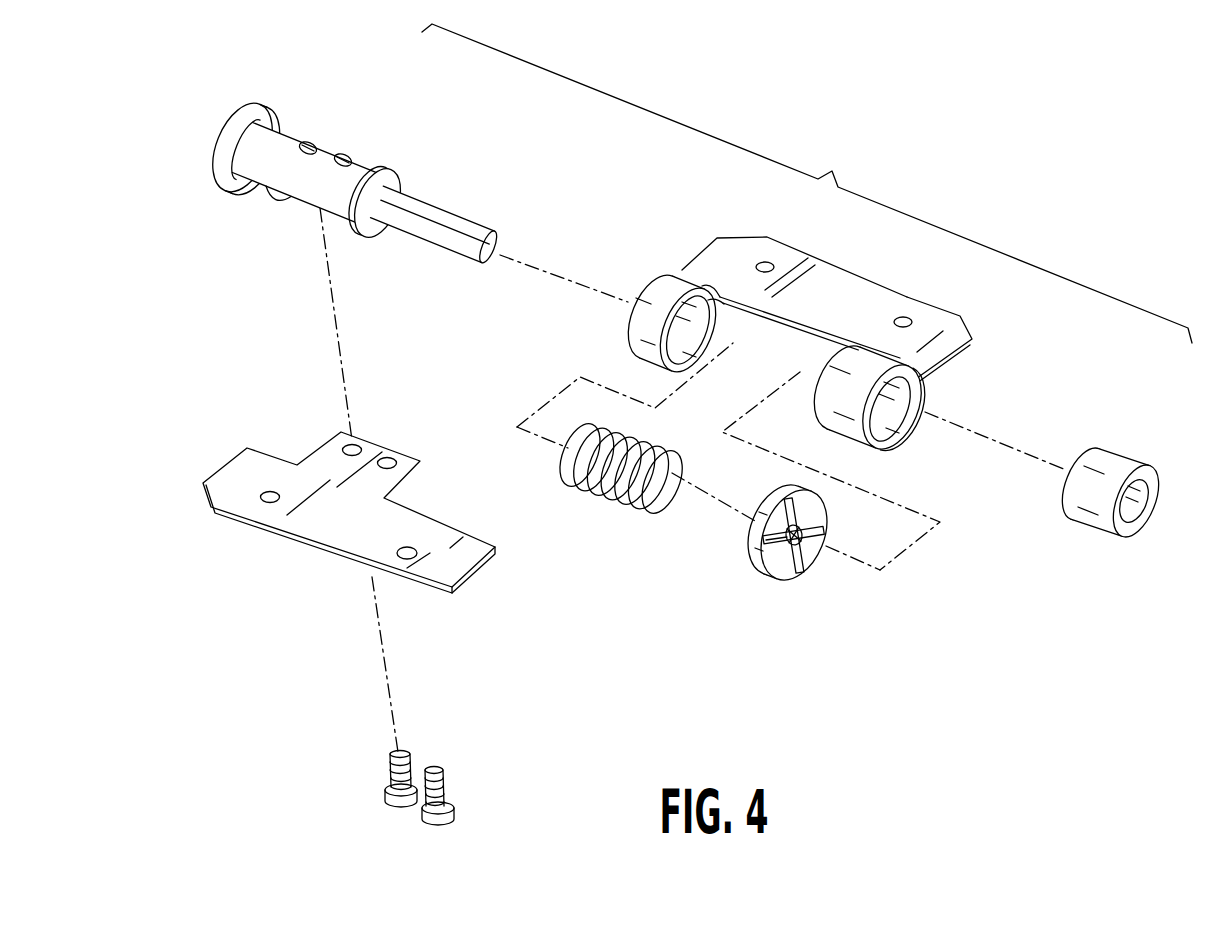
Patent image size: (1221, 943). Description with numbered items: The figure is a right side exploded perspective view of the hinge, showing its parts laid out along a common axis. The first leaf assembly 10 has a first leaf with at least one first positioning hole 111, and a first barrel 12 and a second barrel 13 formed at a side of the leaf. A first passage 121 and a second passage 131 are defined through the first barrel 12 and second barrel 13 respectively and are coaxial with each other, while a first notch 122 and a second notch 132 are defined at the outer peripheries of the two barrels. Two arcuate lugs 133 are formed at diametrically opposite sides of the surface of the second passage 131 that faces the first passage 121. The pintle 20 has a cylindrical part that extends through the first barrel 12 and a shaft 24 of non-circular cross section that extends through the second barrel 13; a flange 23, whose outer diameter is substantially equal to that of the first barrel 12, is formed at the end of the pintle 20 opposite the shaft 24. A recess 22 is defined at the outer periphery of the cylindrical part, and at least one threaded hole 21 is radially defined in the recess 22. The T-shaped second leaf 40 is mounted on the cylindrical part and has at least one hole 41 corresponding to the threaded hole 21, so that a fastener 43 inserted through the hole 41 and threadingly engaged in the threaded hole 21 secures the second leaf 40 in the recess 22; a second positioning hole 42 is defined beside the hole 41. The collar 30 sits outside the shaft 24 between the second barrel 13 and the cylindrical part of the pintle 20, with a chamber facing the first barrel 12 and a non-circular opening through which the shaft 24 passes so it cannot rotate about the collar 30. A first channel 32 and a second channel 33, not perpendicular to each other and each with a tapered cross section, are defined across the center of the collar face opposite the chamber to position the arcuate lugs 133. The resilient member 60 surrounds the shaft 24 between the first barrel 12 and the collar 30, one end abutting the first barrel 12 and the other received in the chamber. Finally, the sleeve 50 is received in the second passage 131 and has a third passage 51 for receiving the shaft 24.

The first leaf assembly 10 is at (857, 290).
The first positioning hole 111 is at (771, 264).
The first barrel 12 is at (677, 325).
The first passage 121 is at (675, 357).
The first notch 122 is at (717, 294).
The second barrel 13 is at (925, 410).
The second passage 131 is at (892, 440).
The second notch 132 is at (915, 385).
The arcuate lugs 133 is at (843, 350).
The pintle 20 is at (330, 170).
The threaded hole 21 is at (345, 154).
The recess 22 is at (303, 202).
The flange 23 is at (211, 150).
The shaft 24 is at (440, 213).
The collar 30 is at (783, 560).
The first channel 32 is at (794, 536).
The second channel 33 is at (767, 547).
The second leaf 40 is at (322, 496).
The hole 41 is at (385, 458).
The second positioning hole 42 is at (268, 495).
The fastener 43 is at (440, 781).
The sleeve 50 is at (1137, 477).
The third passage 51 is at (1143, 497).
The resilient member 60 is at (620, 513).